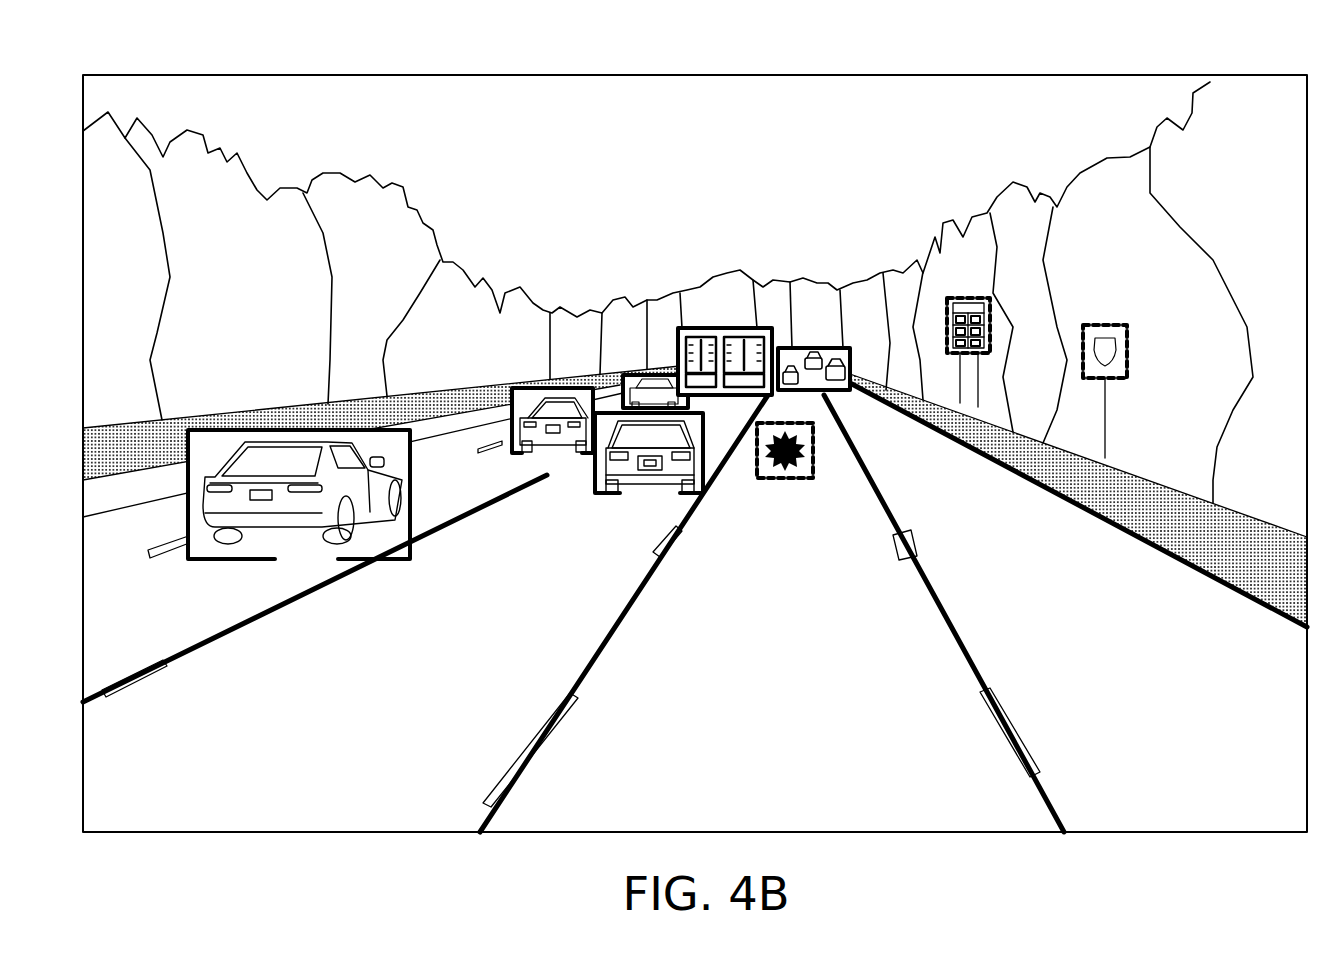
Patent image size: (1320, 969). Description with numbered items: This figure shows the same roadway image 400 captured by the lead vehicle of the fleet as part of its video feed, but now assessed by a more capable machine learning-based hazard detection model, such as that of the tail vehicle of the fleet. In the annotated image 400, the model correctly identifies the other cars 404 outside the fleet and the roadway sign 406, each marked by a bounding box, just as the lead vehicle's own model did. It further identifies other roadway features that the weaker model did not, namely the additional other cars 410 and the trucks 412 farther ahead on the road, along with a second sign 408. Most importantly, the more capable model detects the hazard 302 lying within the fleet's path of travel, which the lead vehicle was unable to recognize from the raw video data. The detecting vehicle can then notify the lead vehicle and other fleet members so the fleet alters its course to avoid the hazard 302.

The image 400 is at (1256, 40).
The other cars 404 is at (335, 583).
The trucks 412 is at (712, 326).
The other cars 410 is at (823, 346).
The detected sign 408 is at (968, 297).
The roadway sign 406 is at (1093, 383).
The hazard 302 is at (785, 482).